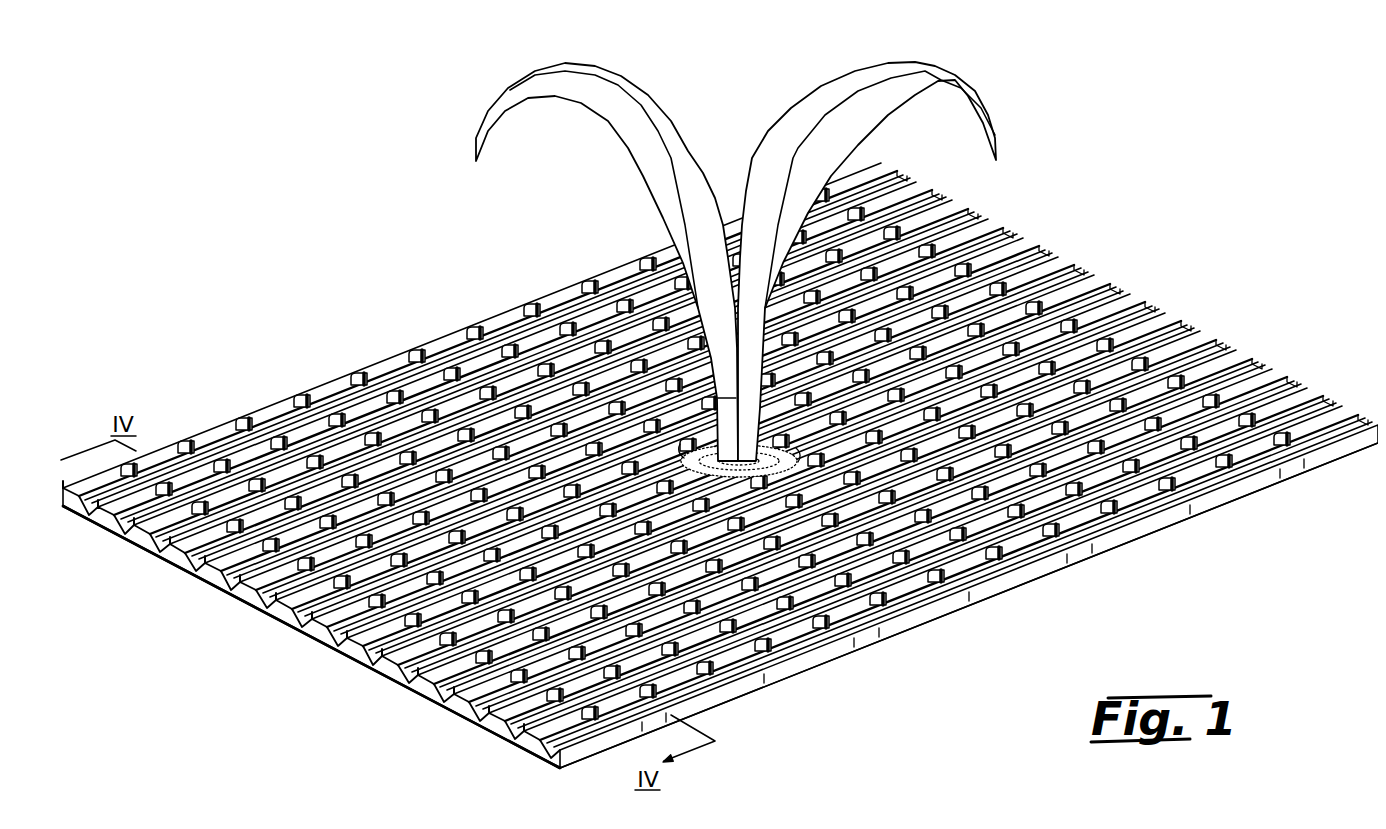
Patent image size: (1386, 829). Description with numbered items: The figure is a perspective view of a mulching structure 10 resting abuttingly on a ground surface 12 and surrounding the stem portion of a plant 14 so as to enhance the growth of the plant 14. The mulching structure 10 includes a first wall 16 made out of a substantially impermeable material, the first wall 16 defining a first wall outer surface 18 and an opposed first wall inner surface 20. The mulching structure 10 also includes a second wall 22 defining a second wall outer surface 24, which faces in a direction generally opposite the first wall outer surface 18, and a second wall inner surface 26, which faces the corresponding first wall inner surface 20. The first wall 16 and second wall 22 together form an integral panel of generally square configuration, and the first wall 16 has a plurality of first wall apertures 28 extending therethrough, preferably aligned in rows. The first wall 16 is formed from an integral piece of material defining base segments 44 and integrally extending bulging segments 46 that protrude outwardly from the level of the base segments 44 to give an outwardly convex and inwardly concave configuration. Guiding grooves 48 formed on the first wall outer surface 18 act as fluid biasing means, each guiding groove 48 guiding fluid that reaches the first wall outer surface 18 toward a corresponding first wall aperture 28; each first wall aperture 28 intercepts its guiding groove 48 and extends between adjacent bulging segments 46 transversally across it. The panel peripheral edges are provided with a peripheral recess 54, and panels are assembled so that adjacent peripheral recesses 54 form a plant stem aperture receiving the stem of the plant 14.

The mulching structure 10 is at (272, 340).
The ground surface 12 is at (807, 457).
The plant 14 is at (682, 441).
The first wall 16 is at (330, 643).
The first wall outer surface 18 is at (373, 660).
The first wall inner surface 20 is at (438, 666).
The second wall 22 is at (498, 731).
The second wall outer surface 24 is at (247, 606).
The second wall inner surface 26 is at (203, 579).
The first wall aperture 28 is at (533, 747).
The base segment 44 is at (1030, 235).
The bulging segment 46 is at (1253, 352).
The guiding groove 48 is at (1133, 297).
The peripheral recess 54 is at (759, 464).